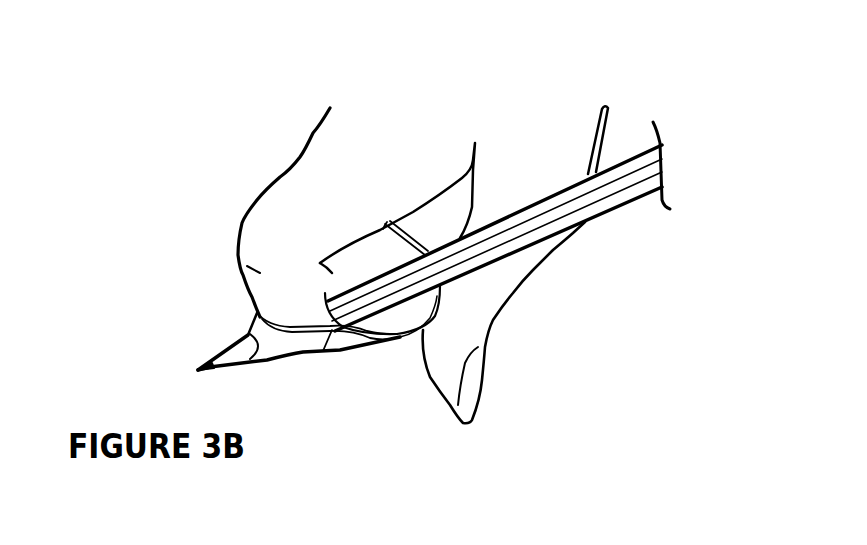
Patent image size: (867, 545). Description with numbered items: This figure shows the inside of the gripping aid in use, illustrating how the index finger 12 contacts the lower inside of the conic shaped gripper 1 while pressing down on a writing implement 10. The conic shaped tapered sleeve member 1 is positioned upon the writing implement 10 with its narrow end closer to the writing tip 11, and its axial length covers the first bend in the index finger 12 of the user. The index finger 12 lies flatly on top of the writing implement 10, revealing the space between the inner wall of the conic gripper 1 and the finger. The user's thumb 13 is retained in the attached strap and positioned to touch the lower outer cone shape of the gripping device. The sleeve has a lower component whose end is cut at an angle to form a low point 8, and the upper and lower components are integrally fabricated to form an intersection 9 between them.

The conic shaped tapered sleeve member 1 is at (303, 349).
The low point 8 is at (258, 313).
The intersection 9 is at (248, 333).
The writing implement 10 is at (587, 222).
The writing tip 11 is at (197, 369).
The index finger 12 is at (298, 297).
The thumb 13 is at (498, 317).